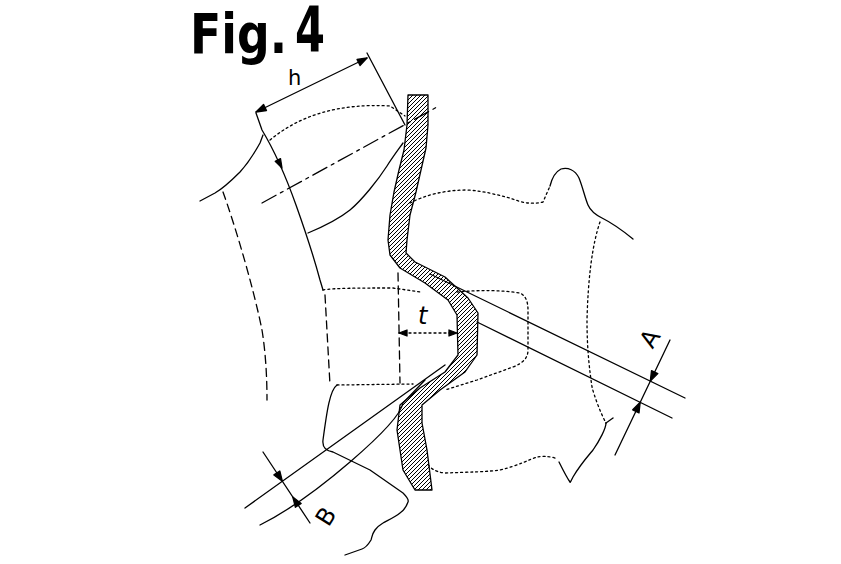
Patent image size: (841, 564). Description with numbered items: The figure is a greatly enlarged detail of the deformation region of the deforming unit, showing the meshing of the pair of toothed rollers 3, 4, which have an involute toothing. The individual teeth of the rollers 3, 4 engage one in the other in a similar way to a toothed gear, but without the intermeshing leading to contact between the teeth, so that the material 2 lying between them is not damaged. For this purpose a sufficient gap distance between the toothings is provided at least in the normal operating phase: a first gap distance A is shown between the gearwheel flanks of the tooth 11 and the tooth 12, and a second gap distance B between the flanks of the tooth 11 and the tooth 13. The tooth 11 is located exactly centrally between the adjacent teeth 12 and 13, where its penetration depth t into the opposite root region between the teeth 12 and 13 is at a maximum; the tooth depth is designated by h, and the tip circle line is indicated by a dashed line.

The material 2 is at (428, 142).
The roller 3 is at (639, 198).
The roller 4 is at (120, 202).
The tooth 11 is at (362, 333).
The tooth 12 is at (470, 228).
The tooth 13 is at (497, 450).